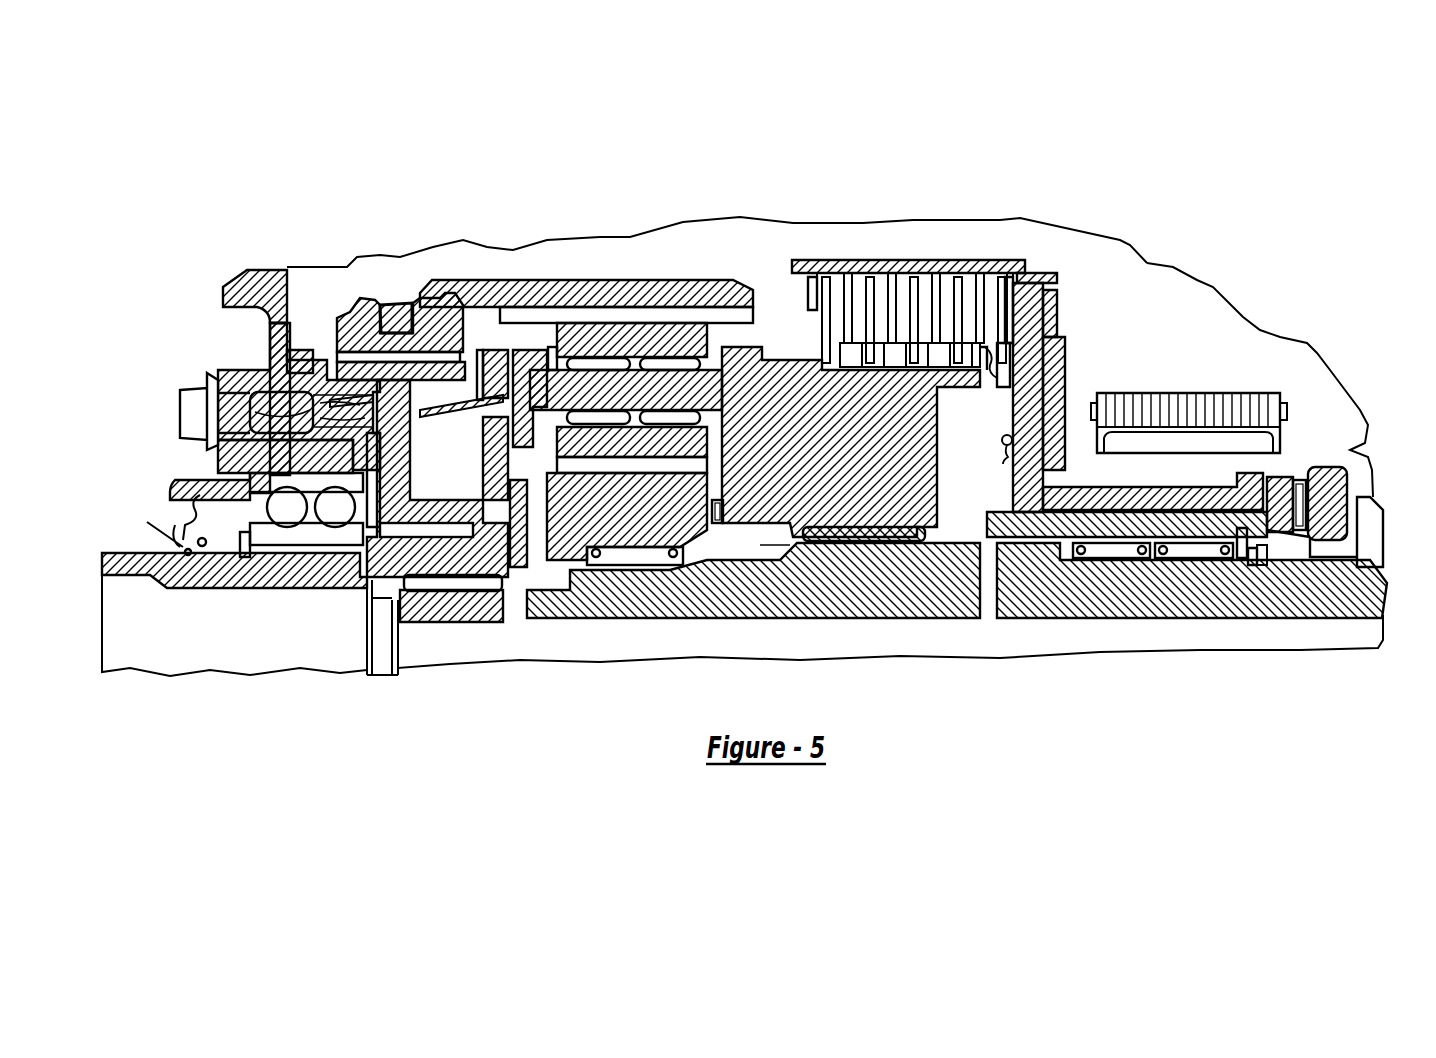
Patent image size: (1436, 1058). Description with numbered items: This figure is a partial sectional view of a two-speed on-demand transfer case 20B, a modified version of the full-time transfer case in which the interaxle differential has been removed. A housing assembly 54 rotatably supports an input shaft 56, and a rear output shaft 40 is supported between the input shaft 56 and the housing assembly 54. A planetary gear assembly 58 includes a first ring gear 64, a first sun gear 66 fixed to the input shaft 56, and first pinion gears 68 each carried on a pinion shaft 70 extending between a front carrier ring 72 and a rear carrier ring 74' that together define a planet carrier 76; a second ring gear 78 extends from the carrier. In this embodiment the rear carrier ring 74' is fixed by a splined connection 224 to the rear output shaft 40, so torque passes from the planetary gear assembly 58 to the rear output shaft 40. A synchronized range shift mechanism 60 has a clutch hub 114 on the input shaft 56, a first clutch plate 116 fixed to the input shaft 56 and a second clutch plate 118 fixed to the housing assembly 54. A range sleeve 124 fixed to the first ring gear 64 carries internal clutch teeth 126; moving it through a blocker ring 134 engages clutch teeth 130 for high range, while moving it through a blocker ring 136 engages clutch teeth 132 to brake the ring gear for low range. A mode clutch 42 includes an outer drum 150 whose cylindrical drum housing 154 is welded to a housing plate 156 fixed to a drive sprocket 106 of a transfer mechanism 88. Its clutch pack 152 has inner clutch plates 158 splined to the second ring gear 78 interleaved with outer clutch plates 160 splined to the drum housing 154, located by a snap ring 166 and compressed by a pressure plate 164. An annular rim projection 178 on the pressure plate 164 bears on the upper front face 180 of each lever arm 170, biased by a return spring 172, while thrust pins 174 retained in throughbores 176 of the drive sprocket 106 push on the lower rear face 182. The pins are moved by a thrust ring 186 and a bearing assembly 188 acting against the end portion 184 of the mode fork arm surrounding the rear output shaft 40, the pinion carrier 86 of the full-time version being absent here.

The transfer case 20B is at (1278, 240).
The housing assembly 54 is at (249, 283).
The clutch teeth 132 is at (277, 325).
The synchronized range shift mechanism 60 is at (320, 270).
The planetary gear assembly 58 is at (513, 253).
The mode clutch 42 is at (1063, 257).
The transfer mechanism 88 is at (1327, 433).
The clutch teeth 126 is at (408, 323).
The range sleeve 124 is at (343, 327).
The clutch teeth 130 is at (520, 348).
The first clutch plate 116 is at (493, 470).
The blocker ring 134 is at (450, 396).
The clutch hub 114 is at (400, 459).
The second clutch plate 118 is at (303, 383).
The blocker ring 136 is at (343, 393).
The input shaft 56 is at (137, 556).
The front carrier ring 72 is at (545, 345).
The first ring gear 64 is at (640, 285).
The first pinion gears 68 is at (638, 345).
The pinion shaft 70 is at (648, 396).
The first sun gear 66 is at (634, 518).
The second ring gear 78 is at (797, 364).
The planet carrier 76 is at (763, 545).
The splined connection 224 is at (845, 543).
The rear carrier ring 74' is at (720, 616).
The outer drum 150 is at (817, 257).
The snap ring 166 is at (810, 292).
The clutch pack 152 is at (887, 294).
The outer clutch plates 160 is at (843, 275).
The drum housing 154 is at (990, 245).
The upper front face 180 is at (1000, 297).
The pressure plate 164 is at (1045, 278).
The lever arms 170 is at (1033, 370).
The annular rim projection 178 is at (1055, 297).
The housing plate 156 is at (1053, 320).
The inner clutch plates 158 is at (974, 392).
The pinion carrier 86 is at (948, 418).
The return spring 172 is at (989, 458).
The drive sprocket 106 is at (1203, 437).
The thrust pins 174 is at (1105, 487).
The lower rear face 182 is at (1053, 473).
The throughbores 176 is at (1153, 507).
The rear output shaft 40 is at (1362, 592).
The thrust ring 186 is at (1277, 530).
The bearing assembly 188 is at (1327, 553).
The end portion 184 is at (1330, 473).